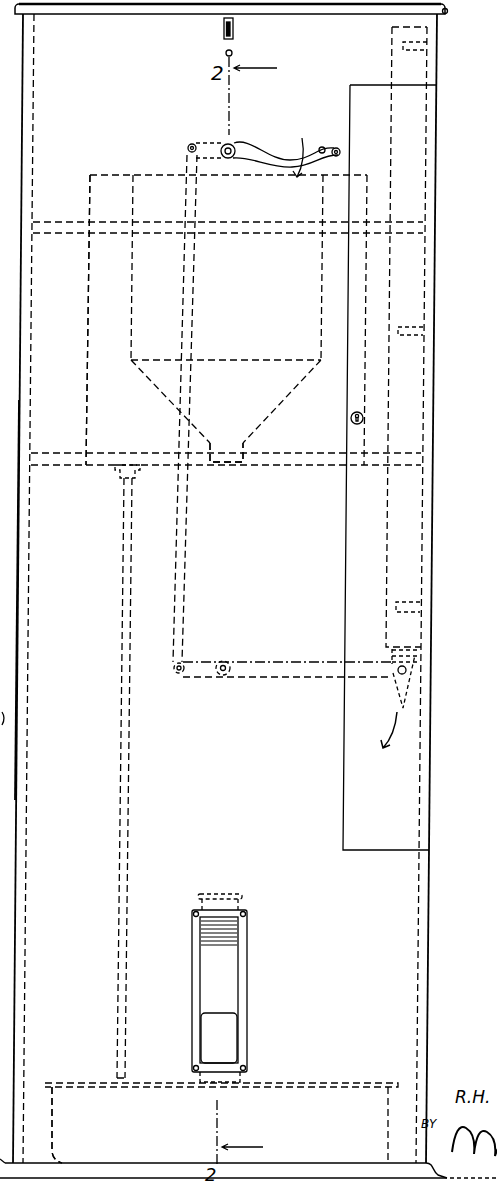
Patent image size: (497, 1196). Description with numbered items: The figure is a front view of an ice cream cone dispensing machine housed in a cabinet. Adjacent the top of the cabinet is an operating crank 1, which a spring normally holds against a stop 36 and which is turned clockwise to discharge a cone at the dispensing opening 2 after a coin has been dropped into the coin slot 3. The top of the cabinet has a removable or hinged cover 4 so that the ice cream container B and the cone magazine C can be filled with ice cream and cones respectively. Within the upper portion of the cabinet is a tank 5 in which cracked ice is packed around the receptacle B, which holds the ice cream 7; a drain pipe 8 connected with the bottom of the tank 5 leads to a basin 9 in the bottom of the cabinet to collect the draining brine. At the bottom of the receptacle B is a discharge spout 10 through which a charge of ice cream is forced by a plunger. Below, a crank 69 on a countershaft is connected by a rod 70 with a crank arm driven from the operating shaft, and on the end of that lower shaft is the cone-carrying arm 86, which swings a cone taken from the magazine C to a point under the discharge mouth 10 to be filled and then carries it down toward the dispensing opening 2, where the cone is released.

The operating crank 1 is at (268, 147).
The dispensing opening 2 is at (238, 1024).
The coin slot 3 is at (233, 29).
The cover 4 is at (445, 15).
The tank 5 is at (88, 312).
The ice cream 7 is at (17, 583).
The drain pipe 8 is at (132, 610).
The basin 9 is at (52, 1104).
The discharge spout 10 is at (208, 447).
The stop 36 is at (322, 147).
The crank 69 is at (221, 660).
The rod 70 is at (194, 408).
The arm 86 is at (319, 680).
The ice cream container B is at (133, 298).
The cone magazine C is at (428, 253).